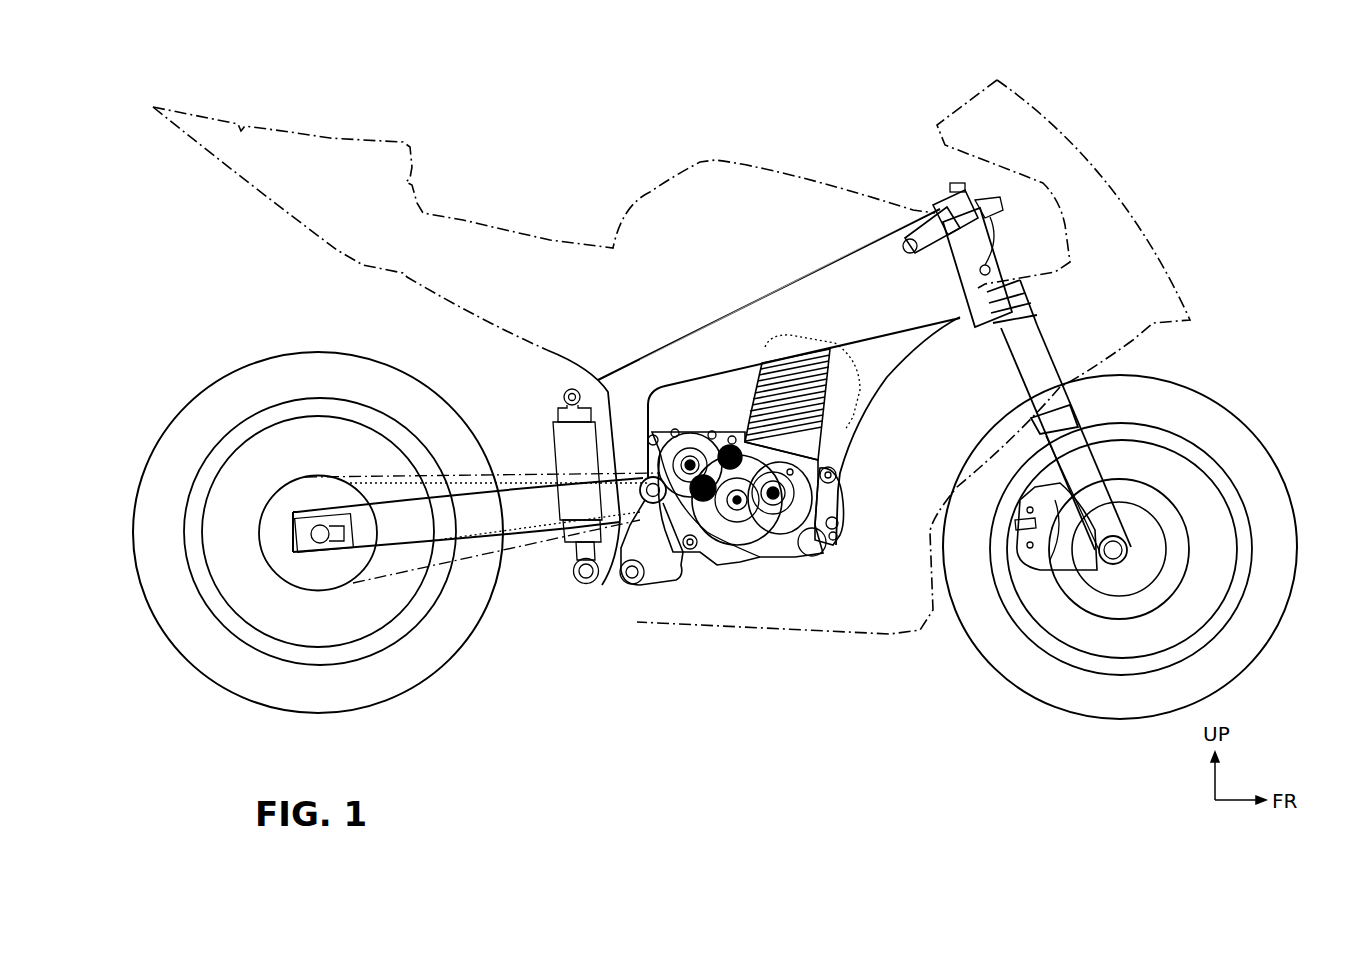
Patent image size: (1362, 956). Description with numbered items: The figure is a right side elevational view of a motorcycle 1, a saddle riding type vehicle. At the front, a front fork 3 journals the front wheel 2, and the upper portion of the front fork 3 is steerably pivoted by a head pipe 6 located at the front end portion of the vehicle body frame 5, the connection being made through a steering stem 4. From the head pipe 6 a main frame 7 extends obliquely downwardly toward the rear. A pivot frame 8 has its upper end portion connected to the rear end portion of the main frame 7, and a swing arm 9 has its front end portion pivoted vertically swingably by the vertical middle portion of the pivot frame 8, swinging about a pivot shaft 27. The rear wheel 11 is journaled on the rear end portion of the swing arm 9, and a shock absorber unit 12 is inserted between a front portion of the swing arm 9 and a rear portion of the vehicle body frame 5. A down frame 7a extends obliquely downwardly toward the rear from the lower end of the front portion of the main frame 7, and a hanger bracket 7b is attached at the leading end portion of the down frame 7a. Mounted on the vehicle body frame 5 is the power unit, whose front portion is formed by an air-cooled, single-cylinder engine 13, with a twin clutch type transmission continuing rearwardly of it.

The motorcycle 1 is at (847, 110).
The front wheel 2 is at (1238, 440).
The front fork 3 is at (1085, 470).
The steering stem 4 is at (1023, 318).
The vehicle body frame 5 is at (803, 268).
The head pipe 6 is at (957, 270).
The main frame 7 is at (783, 300).
The down frame 7a is at (870, 405).
The hanger bracket 7b is at (850, 503).
The pivot frame 8 is at (663, 578).
The swing arm 9 is at (480, 548).
The rear wheel 11 is at (236, 378).
The shock absorber unit 12 is at (570, 457).
The engine 13 is at (845, 552).
The pivot shaft 27 is at (651, 503).